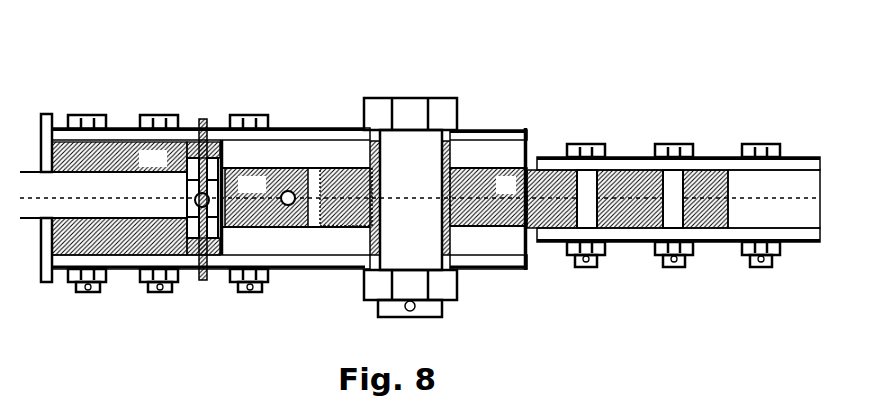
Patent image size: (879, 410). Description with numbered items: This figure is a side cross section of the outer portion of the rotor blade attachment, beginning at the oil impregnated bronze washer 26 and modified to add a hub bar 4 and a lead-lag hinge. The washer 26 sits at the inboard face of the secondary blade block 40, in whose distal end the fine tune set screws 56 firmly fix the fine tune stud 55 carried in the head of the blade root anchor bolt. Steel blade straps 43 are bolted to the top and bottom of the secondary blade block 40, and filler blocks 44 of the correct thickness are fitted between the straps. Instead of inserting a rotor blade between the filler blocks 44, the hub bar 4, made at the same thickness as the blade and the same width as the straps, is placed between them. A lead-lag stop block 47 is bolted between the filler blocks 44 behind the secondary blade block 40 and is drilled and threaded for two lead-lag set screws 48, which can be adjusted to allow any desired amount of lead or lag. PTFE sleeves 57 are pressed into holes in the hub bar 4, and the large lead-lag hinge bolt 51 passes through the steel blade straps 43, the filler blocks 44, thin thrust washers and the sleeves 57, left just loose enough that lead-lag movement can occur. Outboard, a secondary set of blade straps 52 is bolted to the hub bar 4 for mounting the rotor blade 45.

The oil impregnated bronze washer 26 is at (52, 112).
The secondary blade block 40 is at (136, 198).
The steel blade straps 43 is at (284, 118).
The filler blocks 44 is at (478, 158).
The rotor blade 45 is at (774, 199).
The lead-lag stop block 47 is at (266, 197).
The lead-lag set screws 48 is at (288, 191).
The hub bar 4 is at (524, 198).
The lead-lag hinge bolt 51 is at (392, 94).
The secondary set of blade straps 52 is at (722, 152).
The fine tune stud 55 is at (206, 196).
The fine tune set screws 56 is at (208, 117).
The PTFE sleeves 57 is at (372, 170).